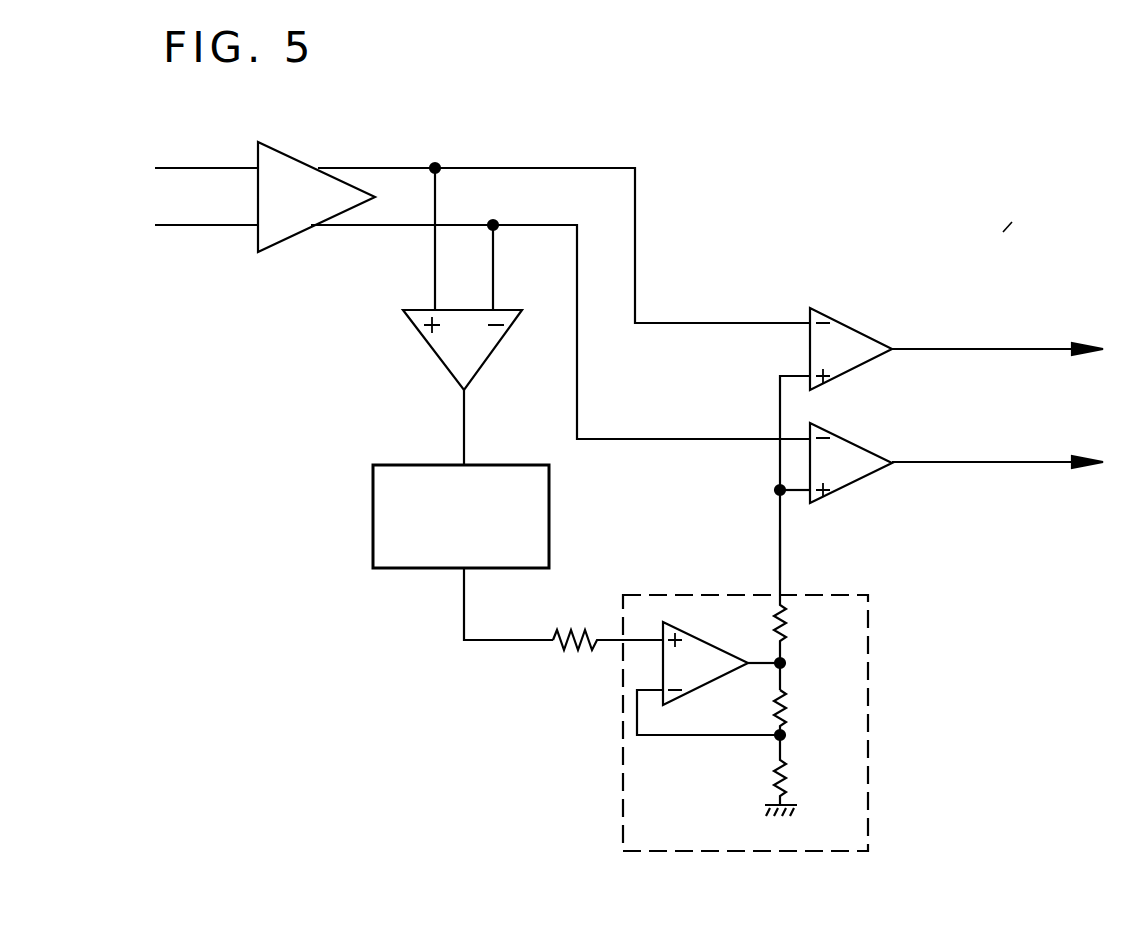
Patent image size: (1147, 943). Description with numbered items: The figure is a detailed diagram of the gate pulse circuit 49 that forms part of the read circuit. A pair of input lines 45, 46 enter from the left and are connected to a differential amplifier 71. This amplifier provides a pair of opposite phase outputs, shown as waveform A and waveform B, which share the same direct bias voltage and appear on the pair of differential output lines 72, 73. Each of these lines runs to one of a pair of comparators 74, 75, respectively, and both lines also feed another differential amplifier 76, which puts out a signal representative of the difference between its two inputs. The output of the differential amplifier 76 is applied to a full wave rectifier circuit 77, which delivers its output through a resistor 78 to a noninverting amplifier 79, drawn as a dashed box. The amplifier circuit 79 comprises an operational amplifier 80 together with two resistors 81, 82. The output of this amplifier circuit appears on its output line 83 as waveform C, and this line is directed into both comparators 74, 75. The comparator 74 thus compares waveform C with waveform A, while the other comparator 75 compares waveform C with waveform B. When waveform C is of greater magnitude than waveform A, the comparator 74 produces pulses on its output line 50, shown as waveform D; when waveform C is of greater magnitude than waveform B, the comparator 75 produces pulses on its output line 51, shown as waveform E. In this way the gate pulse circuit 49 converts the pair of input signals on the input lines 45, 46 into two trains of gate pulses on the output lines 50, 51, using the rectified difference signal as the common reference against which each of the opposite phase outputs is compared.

The input line 45 is at (183, 168).
The input line 46 is at (183, 228).
The differential amplifier 71 is at (296, 232).
The differential output line 72 is at (493, 168).
The differential output line 73 is at (538, 228).
The comparator 74 is at (872, 330).
The comparator 75 is at (878, 478).
The differential amplifier 76 is at (472, 380).
The full wave rectifier circuit 77 is at (552, 508).
The resistor 78 is at (578, 655).
The noninverting amplifier 79 is at (870, 732).
The operational amplifier 80 is at (722, 651).
The resistor 81 is at (790, 712).
The resistor 82 is at (788, 620).
The output line 83 is at (778, 512).
The gate pulse circuit 49 is at (1011, 224).
The output line 50 is at (1040, 338).
The output line 51 is at (1053, 466).
The waveform A is at (377, 168).
The waveform B is at (393, 228).
The waveform C is at (776, 560).
The waveform D is at (962, 338).
The waveform E is at (968, 466).